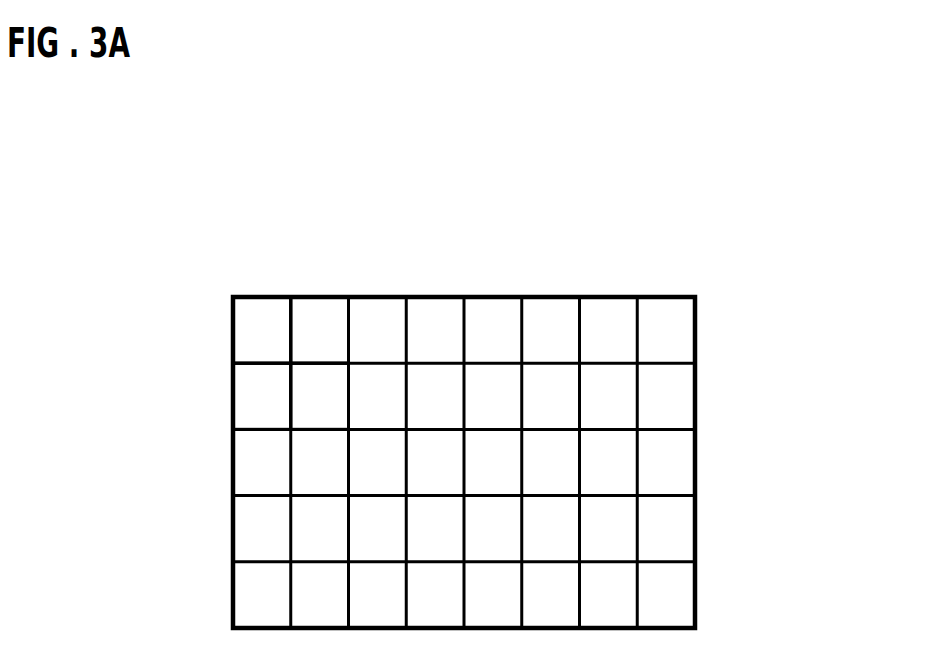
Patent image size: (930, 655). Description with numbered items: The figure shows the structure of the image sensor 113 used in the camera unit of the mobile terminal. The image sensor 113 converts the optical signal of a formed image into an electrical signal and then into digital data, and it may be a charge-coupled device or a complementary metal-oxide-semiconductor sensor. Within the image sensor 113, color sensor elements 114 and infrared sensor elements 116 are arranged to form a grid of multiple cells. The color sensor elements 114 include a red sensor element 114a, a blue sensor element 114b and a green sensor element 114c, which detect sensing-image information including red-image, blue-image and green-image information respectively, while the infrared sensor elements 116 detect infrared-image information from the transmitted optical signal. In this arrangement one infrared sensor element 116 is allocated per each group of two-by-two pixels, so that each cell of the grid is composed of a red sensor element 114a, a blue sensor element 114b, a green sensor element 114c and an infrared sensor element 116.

The image sensor 113 is at (668, 197).
The color sensor elements 114 is at (438, 193).
The red sensor element 114a is at (253, 312).
The blue sensor element 114b is at (343, 392).
The green sensor element 114c is at (327, 312).
The infrared sensor elements 116 is at (248, 397).